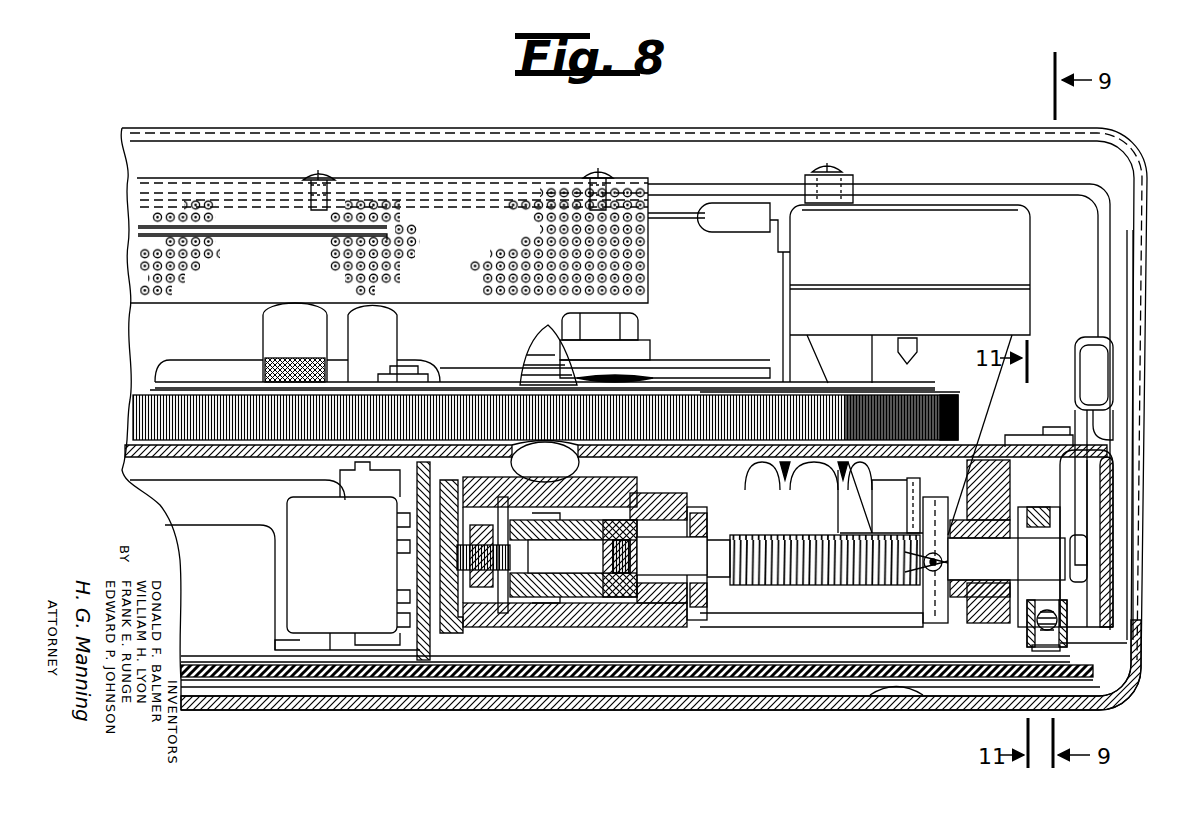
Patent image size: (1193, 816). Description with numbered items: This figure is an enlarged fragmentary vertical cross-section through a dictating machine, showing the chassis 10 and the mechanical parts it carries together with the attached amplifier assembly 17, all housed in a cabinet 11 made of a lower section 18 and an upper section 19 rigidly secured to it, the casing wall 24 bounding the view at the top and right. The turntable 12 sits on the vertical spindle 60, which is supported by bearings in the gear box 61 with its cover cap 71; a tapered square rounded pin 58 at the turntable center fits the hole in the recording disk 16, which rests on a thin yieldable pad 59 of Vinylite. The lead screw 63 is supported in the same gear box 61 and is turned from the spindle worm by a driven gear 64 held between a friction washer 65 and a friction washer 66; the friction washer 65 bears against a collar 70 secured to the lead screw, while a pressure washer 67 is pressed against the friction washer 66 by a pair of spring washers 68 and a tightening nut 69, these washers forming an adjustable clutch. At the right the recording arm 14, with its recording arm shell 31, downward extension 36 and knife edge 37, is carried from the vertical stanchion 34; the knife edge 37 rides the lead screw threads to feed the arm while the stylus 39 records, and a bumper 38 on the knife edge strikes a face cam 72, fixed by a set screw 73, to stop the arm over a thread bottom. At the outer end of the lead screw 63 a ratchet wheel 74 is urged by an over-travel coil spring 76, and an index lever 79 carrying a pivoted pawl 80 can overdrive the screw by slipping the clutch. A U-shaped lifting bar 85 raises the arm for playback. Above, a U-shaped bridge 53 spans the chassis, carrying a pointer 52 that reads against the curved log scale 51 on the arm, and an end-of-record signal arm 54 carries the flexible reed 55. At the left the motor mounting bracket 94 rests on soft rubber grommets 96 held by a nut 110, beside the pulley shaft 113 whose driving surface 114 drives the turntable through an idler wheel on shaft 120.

The chassis 10 is at (1117, 592).
The cabinet 11 is at (396, 708).
The turntable 12 is at (133, 416).
The recording arm 14 is at (1030, 231).
The recording disk 16 is at (728, 382).
The amplifier assembly 17 is at (165, 518).
The lower section 18 is at (610, 708).
The upper section 19 is at (943, 138).
The casing 24 is at (990, 128).
The recording arm shell 31 is at (1015, 264).
The vertical stanchion 34 is at (790, 500).
The downward extension 36 is at (992, 382).
The knife edge 37 is at (905, 515).
The bumper 38 is at (926, 485).
The stylus 39 is at (898, 352).
The curved log scale 51 is at (993, 200).
The pointer 52 is at (850, 195).
The U-shaped bridge 53 is at (730, 184).
The end-of-record signal arm 54 is at (740, 232).
The flexible reed 55 is at (690, 222).
The tapered square rounded pin 58 is at (532, 360).
The thin yieldable pad 59 is at (748, 390).
The vertical spindle 60 is at (548, 455).
The gear box 61 is at (662, 622).
The lead screw 63 is at (808, 583).
The driven gear 64 is at (567, 600).
The friction washer 65 is at (610, 600).
The friction washer 66 is at (528, 598).
The pressure washer 67 is at (503, 616).
The spring washers 68 is at (472, 592).
The tightening nut 69 is at (438, 585).
The collar 70 is at (640, 600).
The cover cap 71 is at (450, 640).
The face cam 72 is at (925, 623).
The set screw 73 is at (928, 570).
The ratchet wheel 74 is at (1127, 643).
The over-travel coil spring 76 is at (1030, 630).
The index lever 79 is at (1105, 378).
The pivoted pawl 80 is at (1130, 497).
The U-shaped lifting bar 85 is at (784, 627).
The mounting bracket 94 is at (693, 368).
The soft rubber grommets 96 is at (652, 350).
The nut 110 is at (640, 322).
The pulley shaft 113 is at (275, 322).
The driving surface 114 is at (265, 365).
The shaft 120 is at (420, 368).